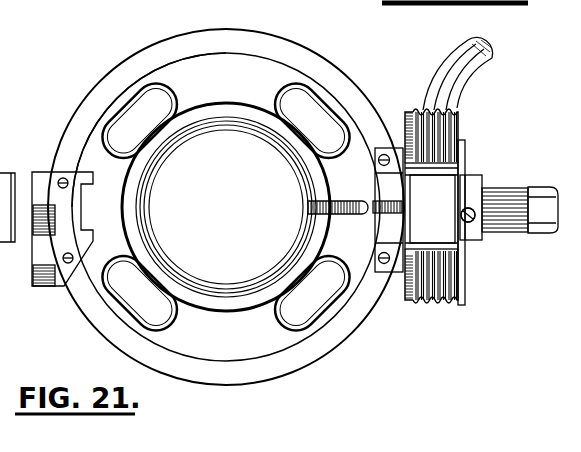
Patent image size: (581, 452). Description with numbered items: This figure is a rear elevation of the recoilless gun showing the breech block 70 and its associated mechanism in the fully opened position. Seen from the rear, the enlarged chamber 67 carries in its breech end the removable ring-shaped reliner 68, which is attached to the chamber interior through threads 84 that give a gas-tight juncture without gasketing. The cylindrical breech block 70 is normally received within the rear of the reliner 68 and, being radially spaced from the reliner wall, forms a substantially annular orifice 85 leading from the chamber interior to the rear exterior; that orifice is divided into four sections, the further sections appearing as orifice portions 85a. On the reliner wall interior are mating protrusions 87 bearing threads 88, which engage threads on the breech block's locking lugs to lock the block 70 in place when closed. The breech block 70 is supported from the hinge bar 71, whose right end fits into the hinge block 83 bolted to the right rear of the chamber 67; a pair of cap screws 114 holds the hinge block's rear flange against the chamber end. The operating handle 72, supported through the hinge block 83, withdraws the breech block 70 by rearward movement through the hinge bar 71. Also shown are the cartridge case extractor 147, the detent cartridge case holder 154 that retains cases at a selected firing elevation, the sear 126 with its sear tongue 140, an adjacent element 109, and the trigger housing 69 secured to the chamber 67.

The chamber 67 is at (177, 43).
The reliner 68 is at (265, 65).
The threads 84 is at (120, 97).
The annular orifice 85 is at (153, 117).
The pocket 85a is at (312, 127).
The mating protrusions 87 is at (118, 175).
The threads 88 is at (122, 205).
The detent cartridge case holder 154 is at (308, 206).
The cap screws 114 is at (381, 146).
The breech block 70 is at (463, 166).
The cartridge case extractor 147 is at (388, 206).
The operating handle 72 is at (478, 72).
The hinge bar 71 is at (470, 179).
The sear 126 is at (462, 213).
The sear tongue 140 is at (471, 223).
The knurled shaft with hex head 109 is at (543, 233).
The trigger housing 69 is at (43, 283).
The hinge block 83 is at (18, 128).